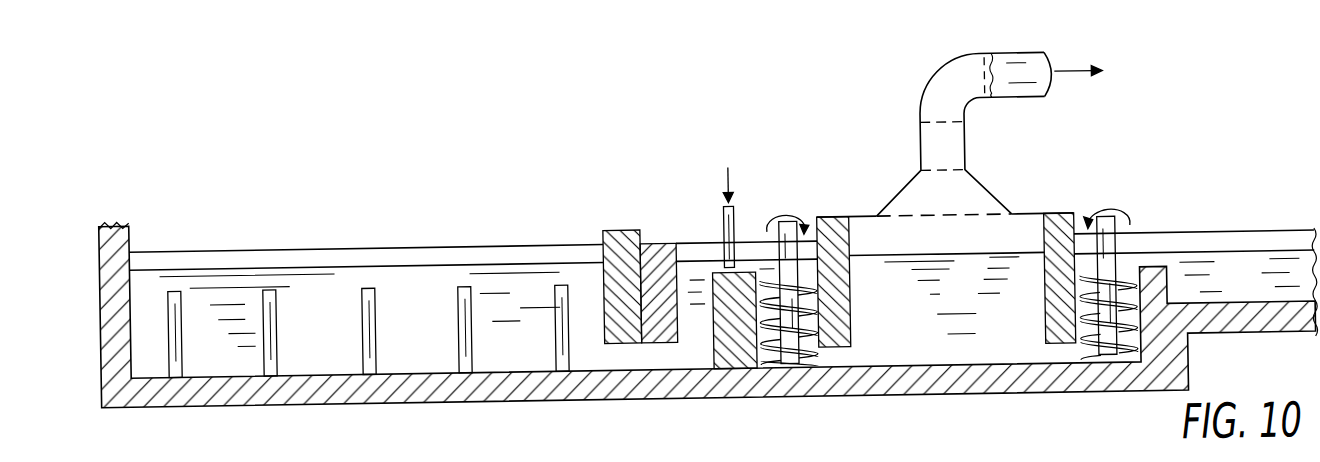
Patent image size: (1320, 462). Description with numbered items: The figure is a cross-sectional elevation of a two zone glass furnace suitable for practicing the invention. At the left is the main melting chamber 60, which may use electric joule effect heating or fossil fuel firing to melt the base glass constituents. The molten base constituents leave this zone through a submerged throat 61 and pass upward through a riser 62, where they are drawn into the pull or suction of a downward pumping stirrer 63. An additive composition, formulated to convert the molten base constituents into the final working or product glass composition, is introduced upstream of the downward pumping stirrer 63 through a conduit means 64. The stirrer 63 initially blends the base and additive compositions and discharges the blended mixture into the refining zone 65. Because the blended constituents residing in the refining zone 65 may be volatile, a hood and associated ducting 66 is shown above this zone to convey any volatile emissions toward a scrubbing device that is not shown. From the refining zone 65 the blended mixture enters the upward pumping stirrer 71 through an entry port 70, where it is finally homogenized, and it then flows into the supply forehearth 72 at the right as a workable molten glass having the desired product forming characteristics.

The main melting chamber 60 is at (426, 325).
The submerged throat 61 is at (643, 354).
The riser 62 is at (700, 311).
The downward pumping stirrer 63 is at (777, 349).
The conduit means 64 is at (725, 211).
The refining zone 65 is at (897, 331).
The exhaust hood 66 is at (905, 190).
The entry port 70 is at (1062, 358).
The upward pumping stirrer 71 is at (1092, 356).
The supply forehearth 72 is at (1230, 302).